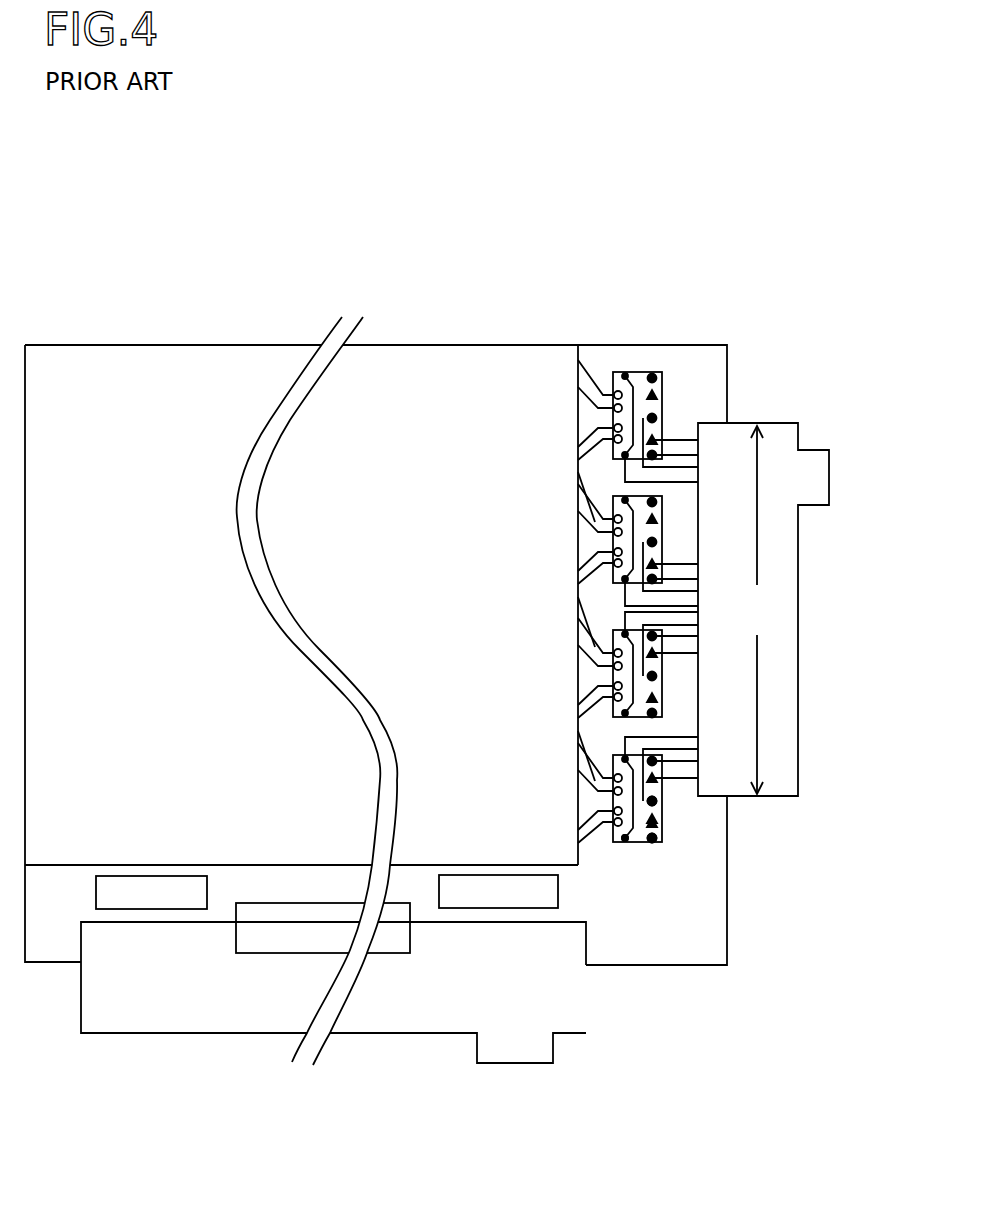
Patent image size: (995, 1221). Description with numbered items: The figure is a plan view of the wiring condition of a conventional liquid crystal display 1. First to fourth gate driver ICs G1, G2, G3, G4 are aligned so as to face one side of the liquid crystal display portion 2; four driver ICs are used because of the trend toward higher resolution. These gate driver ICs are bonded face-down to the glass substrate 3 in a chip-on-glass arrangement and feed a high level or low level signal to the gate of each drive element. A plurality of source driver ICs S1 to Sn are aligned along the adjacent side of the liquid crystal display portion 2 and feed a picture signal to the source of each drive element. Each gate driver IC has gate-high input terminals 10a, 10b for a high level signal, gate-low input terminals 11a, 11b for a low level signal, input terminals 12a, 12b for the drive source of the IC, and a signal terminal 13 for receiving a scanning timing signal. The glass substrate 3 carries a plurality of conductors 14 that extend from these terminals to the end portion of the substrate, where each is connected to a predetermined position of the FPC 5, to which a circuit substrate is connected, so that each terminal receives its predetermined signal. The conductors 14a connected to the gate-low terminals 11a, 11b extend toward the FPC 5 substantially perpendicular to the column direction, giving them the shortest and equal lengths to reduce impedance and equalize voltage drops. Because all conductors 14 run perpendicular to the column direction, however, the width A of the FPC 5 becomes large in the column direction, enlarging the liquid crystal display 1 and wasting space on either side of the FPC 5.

The liquid crystal display 1 is at (730, 320).
The liquid crystal display portion 2 is at (447, 370).
The glass substrate 3 is at (663, 950).
The FPC 5 is at (798, 760).
The conductors 14 is at (672, 440).
The conductors connected to gate-low terminals 14a is at (690, 455).
The gate-high terminal 10a is at (625, 843).
The gate-high terminal 10b is at (612, 757).
The gate-low terminal 11a is at (656, 843).
The gate-low terminal 11b is at (657, 765).
The input terminal for drive source 12a is at (660, 803).
The input terminal for drive source 12b is at (658, 780).
The signal terminal 13 is at (658, 785).
The first gate driver IC G1 is at (613, 803).
The second gate driver IC G2 is at (613, 678).
The third gate driver IC G3 is at (613, 543).
The fourth gate driver IC G4 is at (613, 418).
The source driver IC S1 is at (463, 893).
The source driver IC Sn is at (167, 898).
The width of the FPC A is at (756, 610).